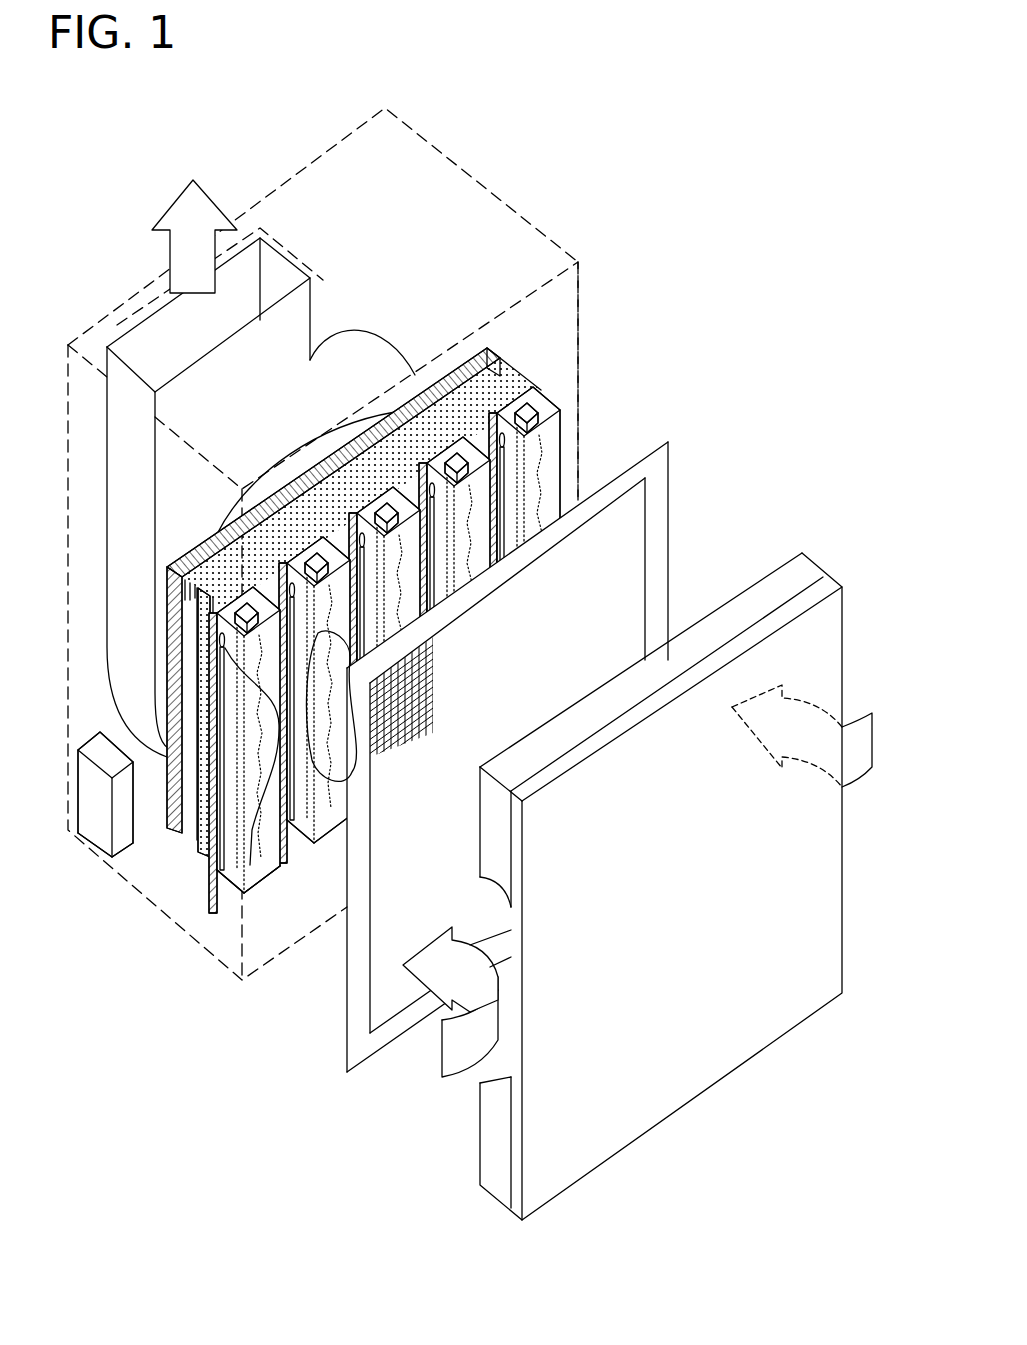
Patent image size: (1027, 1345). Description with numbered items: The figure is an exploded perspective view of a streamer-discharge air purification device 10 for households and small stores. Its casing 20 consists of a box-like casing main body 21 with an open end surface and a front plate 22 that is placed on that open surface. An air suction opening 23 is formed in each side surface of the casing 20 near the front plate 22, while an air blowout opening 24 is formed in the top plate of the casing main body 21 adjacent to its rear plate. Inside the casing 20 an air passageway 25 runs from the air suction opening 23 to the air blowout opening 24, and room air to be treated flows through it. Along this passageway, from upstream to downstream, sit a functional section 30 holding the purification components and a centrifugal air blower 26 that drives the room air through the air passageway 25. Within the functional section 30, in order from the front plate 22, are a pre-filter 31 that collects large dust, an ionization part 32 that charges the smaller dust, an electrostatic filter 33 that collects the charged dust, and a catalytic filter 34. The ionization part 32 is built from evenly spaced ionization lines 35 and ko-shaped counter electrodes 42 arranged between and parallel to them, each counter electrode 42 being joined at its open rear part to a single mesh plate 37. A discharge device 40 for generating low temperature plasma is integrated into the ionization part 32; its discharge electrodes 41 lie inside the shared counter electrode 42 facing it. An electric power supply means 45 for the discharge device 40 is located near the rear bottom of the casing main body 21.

The air purification device 10 is at (697, 141).
The casing 20 is at (514, 198).
The casing main body 21 is at (380, 112).
The front plate 22 is at (738, 1067).
The air suction opening 23 is at (500, 1090).
The air blowout opening 24 is at (113, 325).
The air passageway 25 is at (720, 536).
The centrifugal air blower 26 is at (107, 540).
The functional section 30 is at (357, 651).
The pre-filter 31 is at (348, 1047).
The ionization part 32 is at (573, 440).
The electrostatic filter 33 is at (197, 843).
The catalytic filter 34 is at (168, 815).
The ionization line 35 is at (243, 886).
The mesh plate 37 is at (475, 433).
The discharge device 40 is at (527, 407).
The discharge electrode 41 is at (347, 750).
The counter electrode 42 is at (263, 878).
The electric power supply means 45 is at (78, 787).